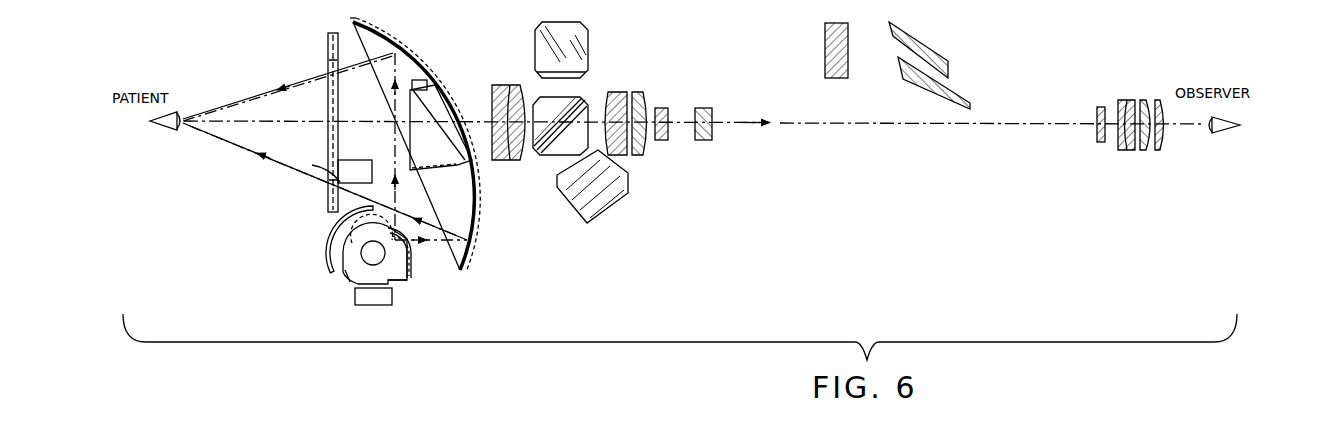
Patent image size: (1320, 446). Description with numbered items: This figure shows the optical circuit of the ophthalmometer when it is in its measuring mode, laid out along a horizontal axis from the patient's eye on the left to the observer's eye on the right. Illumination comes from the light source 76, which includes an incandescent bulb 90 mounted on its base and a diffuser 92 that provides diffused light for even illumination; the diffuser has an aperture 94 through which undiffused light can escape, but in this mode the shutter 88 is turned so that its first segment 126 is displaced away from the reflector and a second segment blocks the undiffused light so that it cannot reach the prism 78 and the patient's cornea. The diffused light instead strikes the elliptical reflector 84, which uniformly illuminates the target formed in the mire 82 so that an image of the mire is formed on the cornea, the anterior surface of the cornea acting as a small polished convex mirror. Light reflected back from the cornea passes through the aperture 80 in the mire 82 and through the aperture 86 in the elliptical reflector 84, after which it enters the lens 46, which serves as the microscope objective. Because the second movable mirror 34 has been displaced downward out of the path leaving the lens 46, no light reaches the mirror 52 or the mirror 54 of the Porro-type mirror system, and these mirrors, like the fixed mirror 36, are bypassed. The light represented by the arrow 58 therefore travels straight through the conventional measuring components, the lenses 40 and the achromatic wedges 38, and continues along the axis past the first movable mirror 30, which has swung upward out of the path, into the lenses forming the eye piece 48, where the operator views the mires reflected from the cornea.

The first movable mirror 30 is at (963, 107).
The second movable mirror 34 is at (613, 200).
The first fixed mirror 36 is at (937, 50).
The achromatic wedges 38 is at (708, 108).
The lenses 40 is at (643, 92).
The lens 46 is at (508, 85).
The eye piece 48 is at (1130, 87).
The mirror 52 is at (540, 153).
The mirror 54 is at (565, 33).
The light arrow 58 is at (838, 125).
The light source 76 is at (415, 285).
The prism 78 is at (363, 160).
The aperture 80 is at (326, 118).
The mire 82 is at (333, 33).
The elliptical reflector 84 is at (478, 205).
The aperture 86 is at (433, 106).
The shutter 88 is at (318, 248).
The incandescent bulb 90 is at (358, 295).
The diffuser 92 is at (347, 277).
The aperture 94 is at (378, 257).
The first segment 126 is at (332, 224).